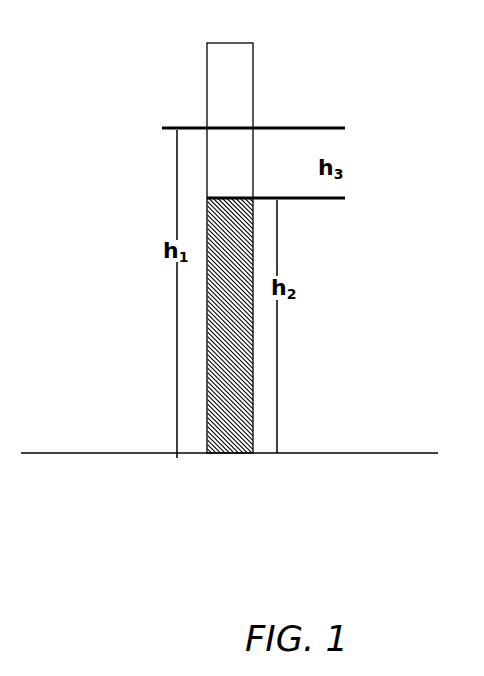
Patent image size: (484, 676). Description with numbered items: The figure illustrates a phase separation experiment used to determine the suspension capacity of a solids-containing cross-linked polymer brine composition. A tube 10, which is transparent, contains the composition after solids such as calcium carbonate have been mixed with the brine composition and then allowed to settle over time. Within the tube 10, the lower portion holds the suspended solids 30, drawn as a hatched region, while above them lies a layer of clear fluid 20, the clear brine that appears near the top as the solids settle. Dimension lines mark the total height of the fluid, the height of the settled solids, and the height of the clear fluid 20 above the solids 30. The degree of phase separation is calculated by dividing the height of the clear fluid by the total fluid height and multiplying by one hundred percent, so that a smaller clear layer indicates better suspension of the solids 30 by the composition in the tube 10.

The tube 10 is at (253, 60).
The clear fluid 20 is at (237, 145).
The suspended solids 30 is at (237, 391).